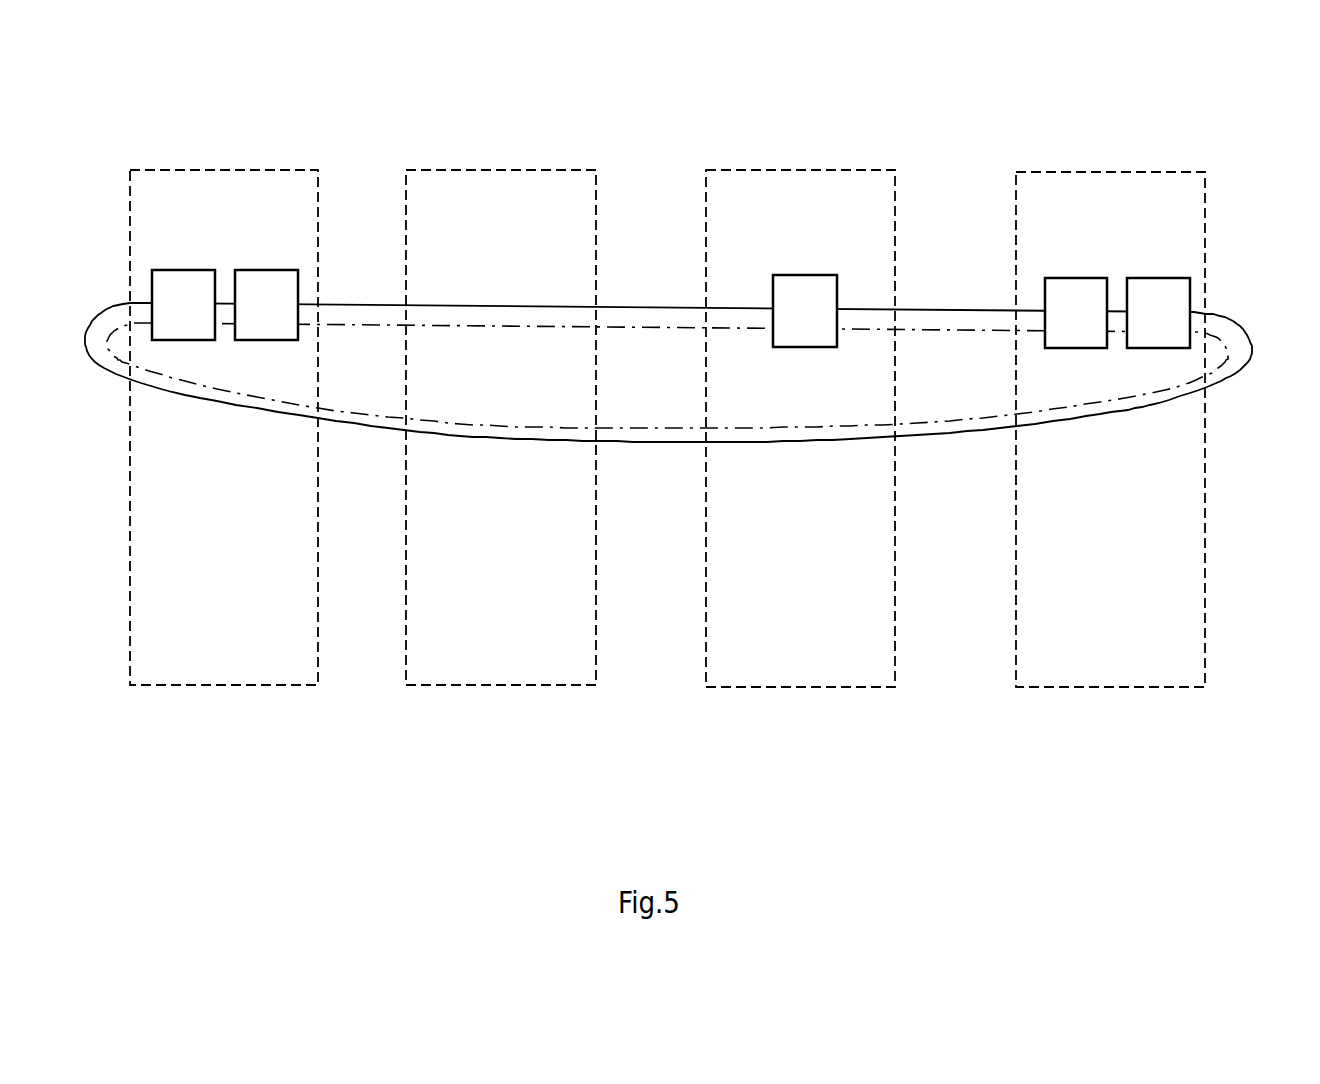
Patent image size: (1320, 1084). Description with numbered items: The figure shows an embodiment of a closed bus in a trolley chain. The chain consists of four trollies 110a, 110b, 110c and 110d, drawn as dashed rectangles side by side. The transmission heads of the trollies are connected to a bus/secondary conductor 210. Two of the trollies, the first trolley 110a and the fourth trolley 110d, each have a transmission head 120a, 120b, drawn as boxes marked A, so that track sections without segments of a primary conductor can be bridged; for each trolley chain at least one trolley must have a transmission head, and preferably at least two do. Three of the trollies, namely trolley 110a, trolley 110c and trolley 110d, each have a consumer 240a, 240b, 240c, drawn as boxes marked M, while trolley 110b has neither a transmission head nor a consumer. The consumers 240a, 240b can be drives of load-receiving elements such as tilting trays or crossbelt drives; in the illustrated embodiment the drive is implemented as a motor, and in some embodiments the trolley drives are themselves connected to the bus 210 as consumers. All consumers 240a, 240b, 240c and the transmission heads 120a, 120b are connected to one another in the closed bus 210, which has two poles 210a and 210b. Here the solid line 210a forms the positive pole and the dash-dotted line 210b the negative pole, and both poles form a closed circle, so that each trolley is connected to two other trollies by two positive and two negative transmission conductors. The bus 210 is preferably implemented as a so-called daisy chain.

The trolley 110a is at (212, 613).
The trolley 110b is at (515, 613).
The trolley 110c is at (827, 623).
The trolley 110d is at (1103, 627).
The transmission head 120a is at (180, 263).
The transmission head 120b is at (1072, 273).
The consumer 240a is at (270, 263).
The consumer 240b is at (820, 270).
The consumer 240c is at (1163, 273).
The bus/secondary conductor 210 is at (1232, 300).
The positive pole 210a is at (377, 303).
The negative pole 210b is at (653, 326).